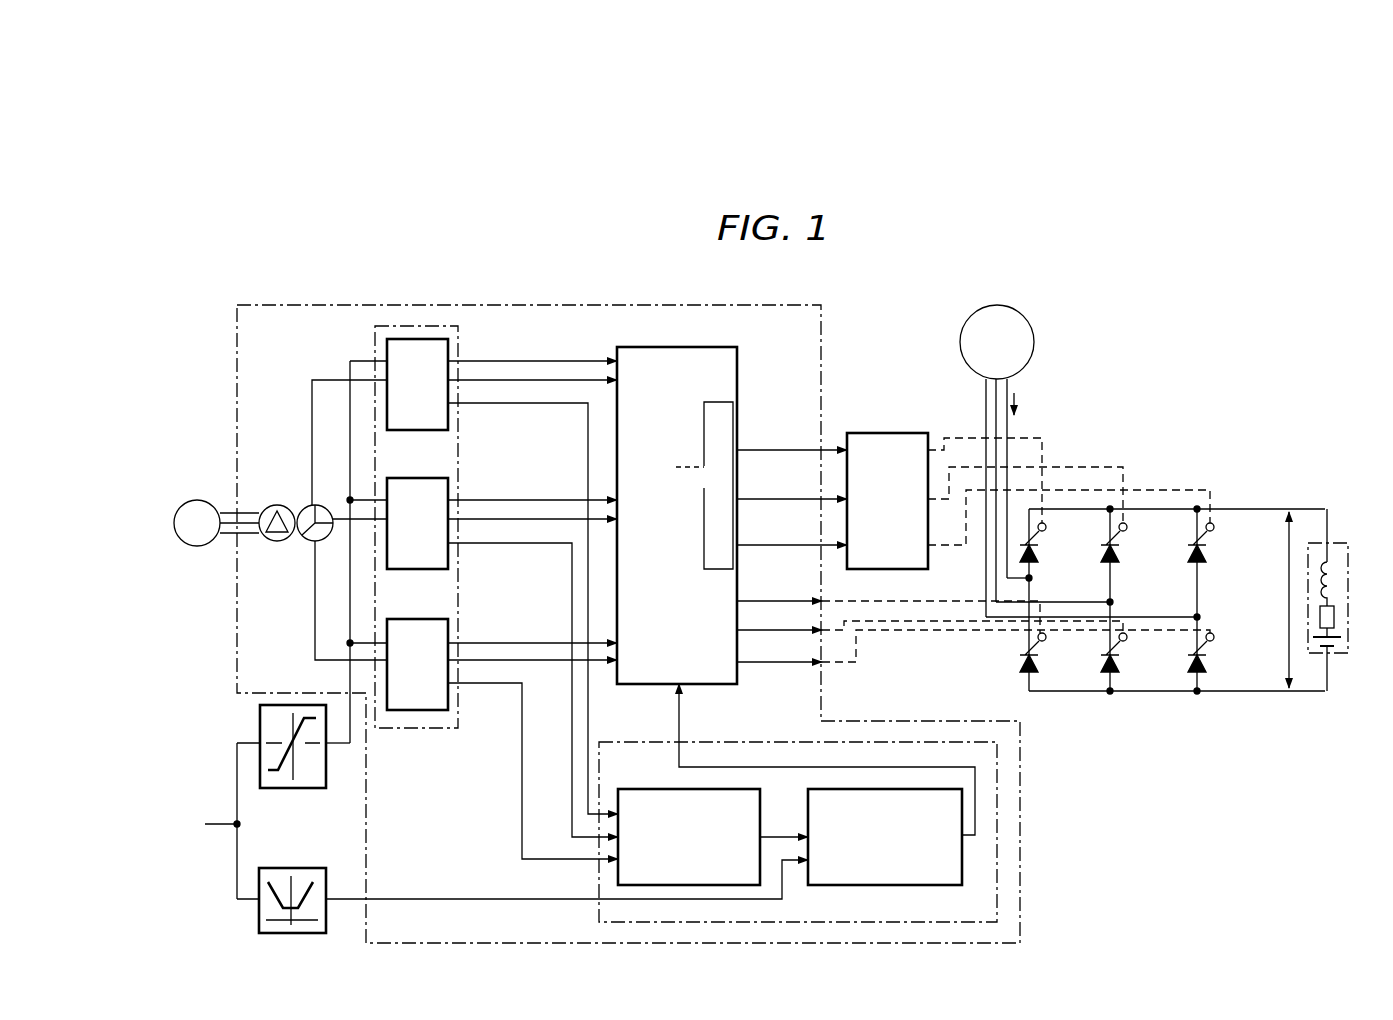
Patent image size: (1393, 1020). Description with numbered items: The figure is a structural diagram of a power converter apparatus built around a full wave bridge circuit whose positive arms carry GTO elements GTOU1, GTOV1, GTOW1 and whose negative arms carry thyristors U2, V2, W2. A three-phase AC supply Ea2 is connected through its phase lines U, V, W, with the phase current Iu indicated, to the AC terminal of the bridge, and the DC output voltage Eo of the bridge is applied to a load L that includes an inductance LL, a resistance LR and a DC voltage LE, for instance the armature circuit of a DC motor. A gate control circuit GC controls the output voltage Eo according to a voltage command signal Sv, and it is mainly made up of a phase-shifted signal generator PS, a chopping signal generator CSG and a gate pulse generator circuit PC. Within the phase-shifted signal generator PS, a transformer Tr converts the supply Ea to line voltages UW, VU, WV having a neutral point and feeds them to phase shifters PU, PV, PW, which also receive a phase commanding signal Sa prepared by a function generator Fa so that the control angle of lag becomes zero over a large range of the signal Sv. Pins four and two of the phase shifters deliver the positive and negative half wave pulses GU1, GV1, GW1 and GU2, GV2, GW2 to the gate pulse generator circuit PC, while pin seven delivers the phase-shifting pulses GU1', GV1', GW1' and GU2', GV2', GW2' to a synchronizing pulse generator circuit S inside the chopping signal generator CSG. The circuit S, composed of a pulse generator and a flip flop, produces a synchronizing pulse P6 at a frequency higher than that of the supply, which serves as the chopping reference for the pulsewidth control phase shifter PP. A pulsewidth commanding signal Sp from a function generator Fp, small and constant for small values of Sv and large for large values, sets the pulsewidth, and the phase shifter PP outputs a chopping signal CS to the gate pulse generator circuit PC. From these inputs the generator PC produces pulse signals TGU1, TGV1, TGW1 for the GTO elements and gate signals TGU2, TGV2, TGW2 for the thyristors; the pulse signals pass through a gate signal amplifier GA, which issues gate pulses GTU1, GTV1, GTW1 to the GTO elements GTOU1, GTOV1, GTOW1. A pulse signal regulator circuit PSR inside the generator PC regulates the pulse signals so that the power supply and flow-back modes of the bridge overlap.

The gate control circuit GC is at (237, 378).
The phase-shifted signal generator PS is at (375, 350).
The three-phase AC supply Ea is at (216, 523).
The transformer Tr is at (276, 505).
The line voltage UW is at (312, 397).
The line voltage VU is at (336, 517).
The line voltage WV is at (315, 650).
The phase shifter PU is at (399, 491).
The phase shifter PV is at (417, 523).
The phase shifter PW is at (417, 664).
The phase pulse GU1 is at (532, 356).
The phase pulse GU2 is at (532, 346).
The phase-shifting pulse signal GU'1 GU1' is at (533, 608).
The phase-shifting pulse signal GU'2 GU2' is at (548, 420).
The phase pulse GV1 is at (532, 494).
The phase pulse GV2 is at (532, 485).
The phase-shifting pulse signal GV'1 GV1' is at (533, 690).
The phase-shifting pulse signal GV'2 GV2' is at (541, 564).
The phase pulse GW1 is at (532, 629).
The phase pulse GW2 is at (532, 629).
The phase-shifting pulse signal GW'1 GW1' is at (533, 771).
The phase-shifting pulse signal GW'2 GW2' is at (489, 734).
The gate pulse generator circuit PC is at (737, 368).
The pulse signal regulator circuit PSR is at (712, 402).
The pulse signal TGU1 is at (792, 438).
The pulse signal TGV1 is at (792, 487).
The pulse signal TGW1 is at (792, 533).
The gate signal TGU2 is at (888, 604).
The gate signal TGV2 is at (930, 619).
The gate signal TGW2 is at (973, 647).
The gate signal amplifier GA is at (860, 433).
The gate pulse GTU1 is at (1044, 440).
The gate pulse GTV1 is at (1100, 467).
The gate pulse GTW1 is at (1176, 490).
The three-phase AC supply Ea2 is at (997, 461).
The phase U is at (1008, 392).
The phase V is at (986, 398).
The phase W is at (986, 405).
The phase current Iu is at (1025, 408).
The GTO element GTOU1 is at (1060, 563).
The GTO element GTOV1 is at (1142, 563).
The GTO element GTOW1 is at (1231, 563).
The thyristor U2 is at (1046, 660).
The thyristor V2 is at (1128, 661).
The thyristor W2 is at (1216, 661).
The DC output voltage Eo is at (1275, 600).
The load L is at (1338, 543).
The inductance LL is at (1334, 582).
The resistance LR is at (1335, 622).
The DC voltage LE is at (1336, 646).
The chopping signal CS is at (679, 723).
The chopping signal generator CSG is at (780, 742).
The synchronizing pulse generator circuit S is at (633, 789).
The synchronizing pulse P6 is at (779, 837).
The pulsewidth control phase shifter PP is at (870, 885).
The phase commanding signal Sa is at (348, 743).
The function generator Fa is at (270, 788).
The function generator Fp is at (270, 868).
The pulsewidth commanding signal Sp is at (344, 899).
The voltage command signal Sv is at (217, 821).